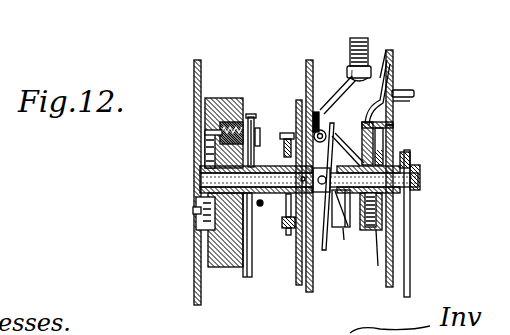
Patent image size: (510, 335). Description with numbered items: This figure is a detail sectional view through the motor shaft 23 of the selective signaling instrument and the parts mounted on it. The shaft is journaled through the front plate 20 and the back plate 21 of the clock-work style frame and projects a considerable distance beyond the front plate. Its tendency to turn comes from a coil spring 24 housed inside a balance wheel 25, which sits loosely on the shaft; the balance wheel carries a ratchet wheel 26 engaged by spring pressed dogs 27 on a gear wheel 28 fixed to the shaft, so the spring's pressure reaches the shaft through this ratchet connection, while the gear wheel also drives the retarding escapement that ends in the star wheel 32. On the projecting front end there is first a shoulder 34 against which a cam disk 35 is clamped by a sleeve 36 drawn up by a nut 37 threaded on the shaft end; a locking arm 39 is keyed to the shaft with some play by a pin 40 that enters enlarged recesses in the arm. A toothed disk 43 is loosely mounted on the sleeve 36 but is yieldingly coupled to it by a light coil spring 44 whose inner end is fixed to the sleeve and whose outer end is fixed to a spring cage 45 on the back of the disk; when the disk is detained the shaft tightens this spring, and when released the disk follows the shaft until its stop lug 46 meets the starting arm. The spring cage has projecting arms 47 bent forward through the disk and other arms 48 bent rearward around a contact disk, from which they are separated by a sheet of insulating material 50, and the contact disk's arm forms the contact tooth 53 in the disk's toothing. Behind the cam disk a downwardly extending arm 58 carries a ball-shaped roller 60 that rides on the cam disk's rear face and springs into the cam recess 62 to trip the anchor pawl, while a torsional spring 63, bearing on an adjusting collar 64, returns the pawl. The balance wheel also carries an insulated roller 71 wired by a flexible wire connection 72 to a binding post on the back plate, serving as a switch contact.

The front plate 20 is at (310, 293).
The back plate 21 is at (201, 290).
The motor shaft 23 is at (200, 183).
The coil spring 24 is at (194, 145).
The balance wheel 25 is at (235, 268).
The ratchet wheel 26 is at (261, 207).
The spring pressed dogs 27 is at (284, 148).
The gear wheel 28 is at (298, 268).
The star wheel 32 is at (370, 92).
The shoulder 34 is at (330, 191).
The cam disk 35 is at (328, 142).
The sleeve 36 is at (349, 208).
The nut 37 is at (411, 158).
The locking arm 39 is at (411, 242).
The pin 40 is at (420, 181).
The toothed disk 43 is at (394, 66).
The coil spring 44 is at (384, 142).
The spring cage 45 is at (378, 268).
The stop lug 46 is at (404, 90).
The projecting arms 47 is at (394, 126).
The arms 48 is at (368, 224).
The sheet of insulating material 50 is at (411, 101).
The contact tooth 53 is at (389, 50).
The downwardly extending arm 58 is at (334, 108).
The ball-shaped roller 60 is at (313, 133).
The cam recess 62 is at (344, 242).
The torsional spring 63 is at (360, 37).
The adjusting collar 64 is at (349, 72).
The roller 71 is at (253, 116).
The flexible wire connection 72 is at (250, 277).